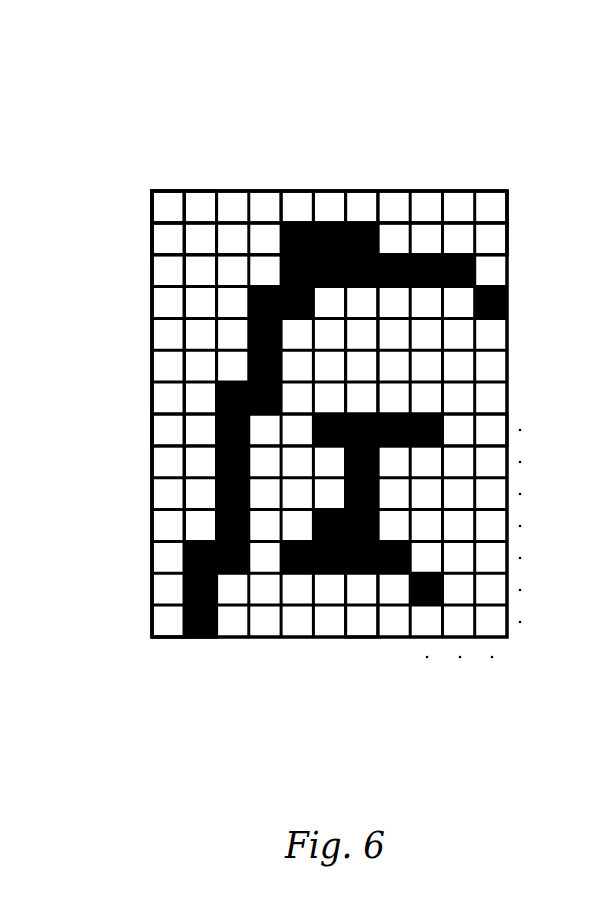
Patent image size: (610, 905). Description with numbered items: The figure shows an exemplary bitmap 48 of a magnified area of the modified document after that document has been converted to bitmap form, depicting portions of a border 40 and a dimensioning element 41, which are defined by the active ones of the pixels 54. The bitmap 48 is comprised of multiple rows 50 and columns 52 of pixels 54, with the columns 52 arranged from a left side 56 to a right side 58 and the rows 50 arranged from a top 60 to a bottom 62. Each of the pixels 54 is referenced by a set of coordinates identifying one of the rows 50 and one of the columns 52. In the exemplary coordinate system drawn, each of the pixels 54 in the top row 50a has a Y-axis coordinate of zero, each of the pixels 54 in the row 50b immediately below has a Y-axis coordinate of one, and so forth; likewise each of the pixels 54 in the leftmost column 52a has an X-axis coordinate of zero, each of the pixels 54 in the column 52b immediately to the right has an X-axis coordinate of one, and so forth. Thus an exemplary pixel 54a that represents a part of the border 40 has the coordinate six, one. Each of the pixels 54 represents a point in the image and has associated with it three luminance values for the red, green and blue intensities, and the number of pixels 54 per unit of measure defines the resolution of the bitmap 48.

The border 40 is at (362, 224).
The dimensioning element 41 is at (380, 577).
The bitmap 48 is at (510, 130).
The rows 50 is at (150, 207).
The top row 50a is at (329, 207).
The row immediately below 50b is at (329, 239).
The columns 52 is at (177, 184).
The leftmost column 52a is at (168, 414).
The column immediately to the right 52b is at (200, 414).
The pixels 54 is at (167, 207).
The exemplary pixel 54a is at (293, 217).
The left side 56 is at (122, 432).
The right side 58 is at (544, 352).
The top 60 is at (355, 183).
The bottom 62 is at (471, 671).